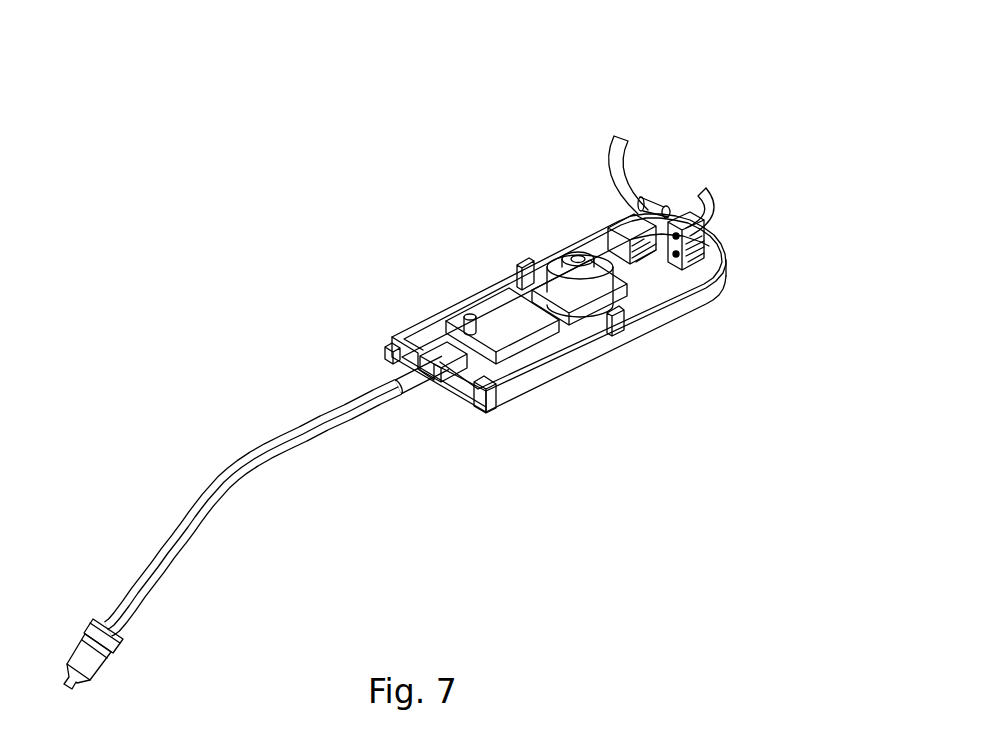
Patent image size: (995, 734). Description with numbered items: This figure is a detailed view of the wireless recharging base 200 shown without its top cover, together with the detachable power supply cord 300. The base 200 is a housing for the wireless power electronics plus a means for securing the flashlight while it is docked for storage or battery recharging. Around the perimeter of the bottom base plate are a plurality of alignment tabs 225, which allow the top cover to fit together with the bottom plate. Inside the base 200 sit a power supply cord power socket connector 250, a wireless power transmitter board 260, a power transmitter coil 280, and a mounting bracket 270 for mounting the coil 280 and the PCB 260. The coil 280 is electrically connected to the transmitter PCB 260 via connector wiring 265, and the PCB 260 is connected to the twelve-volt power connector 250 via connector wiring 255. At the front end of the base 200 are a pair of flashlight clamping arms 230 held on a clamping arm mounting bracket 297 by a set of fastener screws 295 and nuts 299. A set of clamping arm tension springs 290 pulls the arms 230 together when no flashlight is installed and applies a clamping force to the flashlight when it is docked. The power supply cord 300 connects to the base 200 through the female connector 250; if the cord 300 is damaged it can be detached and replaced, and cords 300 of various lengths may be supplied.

The wireless recharging base 200 is at (690, 113).
The alignment tabs 225 is at (398, 343).
The flashlight clamping arms 230 is at (616, 138).
The power supply cord power socket connector 250 is at (442, 356).
The connector wiring 255 is at (468, 350).
The wireless power transmitter board 260 is at (502, 330).
The connector wiring 265 is at (562, 305).
The mounting bracket 270 is at (542, 352).
The power transmitter coil 280 is at (553, 263).
The clamping arm tension springs 290 is at (628, 226).
The fastener screws 295 is at (690, 237).
The clamping arm mounting bracket 297 is at (700, 260).
The nuts 299 is at (664, 198).
The detachable power supply cord 300 is at (238, 453).